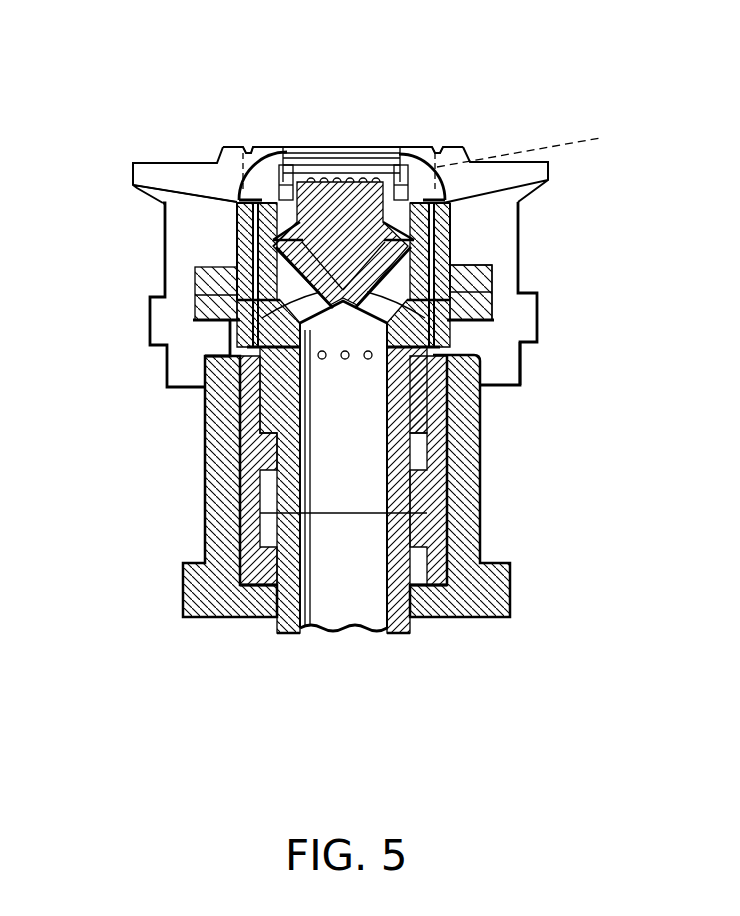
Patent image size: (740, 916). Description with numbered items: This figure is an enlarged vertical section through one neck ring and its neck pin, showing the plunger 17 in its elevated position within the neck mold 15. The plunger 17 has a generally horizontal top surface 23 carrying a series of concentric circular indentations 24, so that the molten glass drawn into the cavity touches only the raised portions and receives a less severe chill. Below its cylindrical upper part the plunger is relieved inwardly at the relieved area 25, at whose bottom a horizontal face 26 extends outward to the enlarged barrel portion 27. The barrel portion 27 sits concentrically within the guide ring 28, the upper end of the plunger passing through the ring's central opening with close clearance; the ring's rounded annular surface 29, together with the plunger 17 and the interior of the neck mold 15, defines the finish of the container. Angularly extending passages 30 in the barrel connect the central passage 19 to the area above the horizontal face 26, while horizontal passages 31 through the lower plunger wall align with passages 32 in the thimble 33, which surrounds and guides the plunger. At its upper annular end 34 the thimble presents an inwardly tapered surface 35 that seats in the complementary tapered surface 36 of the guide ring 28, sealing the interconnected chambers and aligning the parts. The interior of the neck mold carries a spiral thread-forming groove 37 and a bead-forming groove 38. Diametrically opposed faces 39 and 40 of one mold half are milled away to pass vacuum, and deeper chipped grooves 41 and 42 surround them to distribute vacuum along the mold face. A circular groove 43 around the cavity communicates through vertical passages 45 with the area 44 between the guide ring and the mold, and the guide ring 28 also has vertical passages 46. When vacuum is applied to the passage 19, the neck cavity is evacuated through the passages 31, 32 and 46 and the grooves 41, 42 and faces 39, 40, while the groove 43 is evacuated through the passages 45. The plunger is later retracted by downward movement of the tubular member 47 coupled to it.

The neck mold 15 is at (173, 178).
The plunger 17 is at (356, 147).
The passage 19 is at (362, 488).
The top surface 23 is at (303, 177).
The circular indentations 24 is at (343, 200).
The relieved area 25 is at (443, 218).
The horizontal face 26 is at (443, 240).
The barrel portion 27 is at (487, 283).
The guide ring 28 is at (240, 233).
The rounded annular surface 29 is at (288, 170).
The angularly extending passages 30 is at (205, 387).
The horizontally extending passages 31 is at (325, 359).
The passages 32 is at (388, 400).
The thimble 33 is at (470, 513).
The upper annular end 34 is at (490, 313).
The tapered surface 35 is at (232, 321).
The complementary tapered surface 36 is at (217, 297).
The thread-forming groove 37 is at (457, 145).
The groove 38 is at (402, 193).
The relieved face 39 is at (273, 183).
The relieved face 40 is at (395, 148).
The chipped groove 41 is at (238, 190).
The chipped groove 42 is at (553, 172).
The circular groove 43 is at (243, 147).
The area 44 is at (237, 208).
The vertical passages 45 is at (534, 147).
The vertical passages 46 is at (257, 253).
The tubular member 47 is at (278, 622).